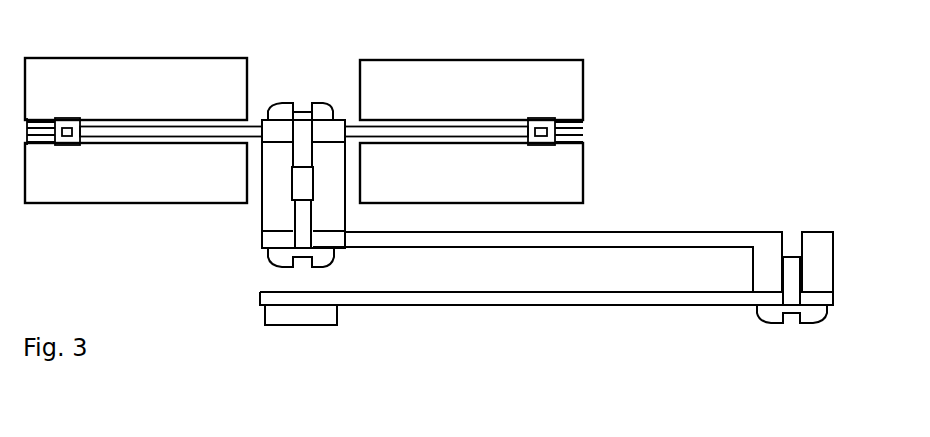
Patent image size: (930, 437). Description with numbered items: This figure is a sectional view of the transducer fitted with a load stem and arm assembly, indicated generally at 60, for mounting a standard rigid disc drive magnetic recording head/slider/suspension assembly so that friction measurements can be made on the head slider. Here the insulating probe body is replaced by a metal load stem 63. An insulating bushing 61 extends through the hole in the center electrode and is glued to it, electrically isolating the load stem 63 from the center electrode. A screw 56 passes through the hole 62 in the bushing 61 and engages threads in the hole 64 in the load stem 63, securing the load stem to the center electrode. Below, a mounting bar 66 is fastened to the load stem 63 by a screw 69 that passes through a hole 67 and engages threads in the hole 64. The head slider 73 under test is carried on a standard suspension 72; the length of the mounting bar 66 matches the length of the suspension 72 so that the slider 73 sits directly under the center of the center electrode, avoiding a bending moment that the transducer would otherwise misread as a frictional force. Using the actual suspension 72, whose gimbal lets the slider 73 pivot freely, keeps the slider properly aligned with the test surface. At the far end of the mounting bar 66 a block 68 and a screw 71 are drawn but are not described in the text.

The screw 56 is at (330, 106).
The magnet support assembly 60 is at (742, 88).
The insulating bushing 61 is at (344, 118).
The hole 62 is at (282, 133).
The load stem 63 is at (262, 226).
The hole 64 is at (292, 186).
The mounting bar 66 is at (633, 231).
The hole 67 is at (316, 241).
The end block 68 is at (800, 234).
The screw 69 is at (273, 264).
The end screw 71 is at (767, 323).
The suspension 72 is at (686, 306).
The head slider 73 is at (300, 326).